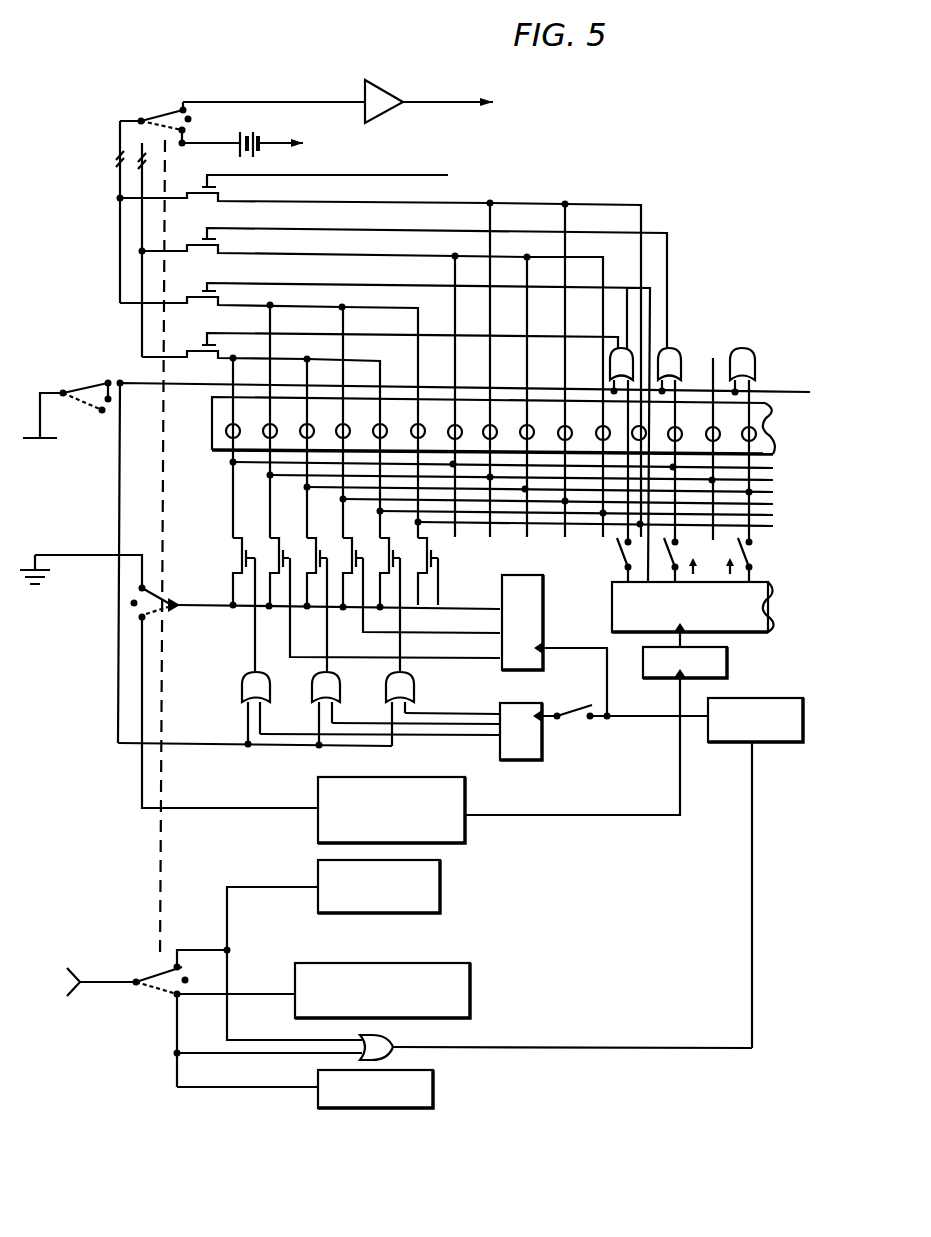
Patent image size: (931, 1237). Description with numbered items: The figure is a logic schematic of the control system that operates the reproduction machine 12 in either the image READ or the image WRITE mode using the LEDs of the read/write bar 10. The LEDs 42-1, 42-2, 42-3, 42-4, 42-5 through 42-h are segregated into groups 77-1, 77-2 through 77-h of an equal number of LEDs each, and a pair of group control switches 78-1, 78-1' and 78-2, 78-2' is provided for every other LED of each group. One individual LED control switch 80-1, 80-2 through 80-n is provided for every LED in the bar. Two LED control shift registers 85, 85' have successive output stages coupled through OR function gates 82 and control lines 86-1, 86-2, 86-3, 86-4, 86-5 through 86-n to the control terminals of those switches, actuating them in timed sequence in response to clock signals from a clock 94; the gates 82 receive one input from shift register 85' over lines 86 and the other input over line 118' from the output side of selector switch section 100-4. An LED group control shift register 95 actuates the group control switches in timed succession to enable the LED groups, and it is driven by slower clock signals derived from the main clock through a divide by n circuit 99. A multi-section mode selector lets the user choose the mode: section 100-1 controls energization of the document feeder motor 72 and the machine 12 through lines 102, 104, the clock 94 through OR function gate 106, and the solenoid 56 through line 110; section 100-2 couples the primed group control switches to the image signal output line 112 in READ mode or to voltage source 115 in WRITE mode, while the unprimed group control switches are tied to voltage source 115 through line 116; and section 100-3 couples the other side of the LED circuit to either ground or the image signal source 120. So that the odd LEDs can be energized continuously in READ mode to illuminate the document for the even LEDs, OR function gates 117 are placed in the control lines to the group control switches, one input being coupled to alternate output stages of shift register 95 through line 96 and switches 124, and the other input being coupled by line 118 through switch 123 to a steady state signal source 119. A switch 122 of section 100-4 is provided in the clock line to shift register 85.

The read/write bar 10 is at (697, 390).
The reproduction machine 12 is at (445, 963).
The LED 42-1 is at (226, 425).
The LED 42-2 is at (264, 425).
The LED 42-3 is at (301, 425).
The LED 42-4 is at (338, 425).
The LED 42-5 is at (374, 425).
The LED 42-h is at (412, 425).
The solenoid 56 is at (438, 1090).
The document feeder motor 72 is at (443, 890).
The LED group 77-1 is at (200, 470).
The LED group 77-2 is at (540, 553).
The LED group 77-h is at (791, 550).
The LED group control switch 78-1 is at (380, 426).
The LED group control switch 78-1' is at (385, 422).
The LED group control switch 78-2 is at (404, 372).
The LED group control switch 78-2' is at (380, 356).
The LED control switch 80-1 is at (240, 557).
The LED control switch 80-2 is at (280, 562).
The LED control switch 80-n is at (425, 562).
The OR function gate 82 is at (270, 694).
The LED control shift register 85 is at (513, 711).
The LED control shift register 85' is at (554, 645).
The control lines 86 is at (428, 730).
The control line 86-1 is at (253, 640).
The control line 86-2 is at (287, 656).
The control line 86-3 is at (325, 656).
The control line 86-4 is at (386, 634).
The control line 86-5 is at (400, 626).
The control line 86-n is at (456, 618).
The clock 94 is at (800, 698).
The LED group control shift register 95 is at (612, 610).
The line 96 is at (613, 547).
The divide by n circuit 99 is at (728, 664).
The selector switch section 100-1 is at (152, 972).
The selector switch section 100-2 is at (162, 97).
The selector switch section 100-3 is at (133, 602).
The selector switch section 100-4 is at (67, 379).
The line 102 is at (290, 885).
The line 104 is at (290, 960).
The OR function gate 106 is at (398, 1040).
The line 110 is at (292, 1074).
The image signal output line 112 is at (388, 90).
The voltage source 115 is at (256, 138).
The line 116 is at (140, 277).
The OR function gate 117 is at (620, 350).
The line 118 is at (435, 550).
The line 118' is at (255, 727).
The steady state signal source 119 is at (40, 445).
The image signal source 120 is at (315, 786).
The switch 122 is at (576, 707).
The switch 123 is at (106, 404).
The switches 124 is at (677, 558).